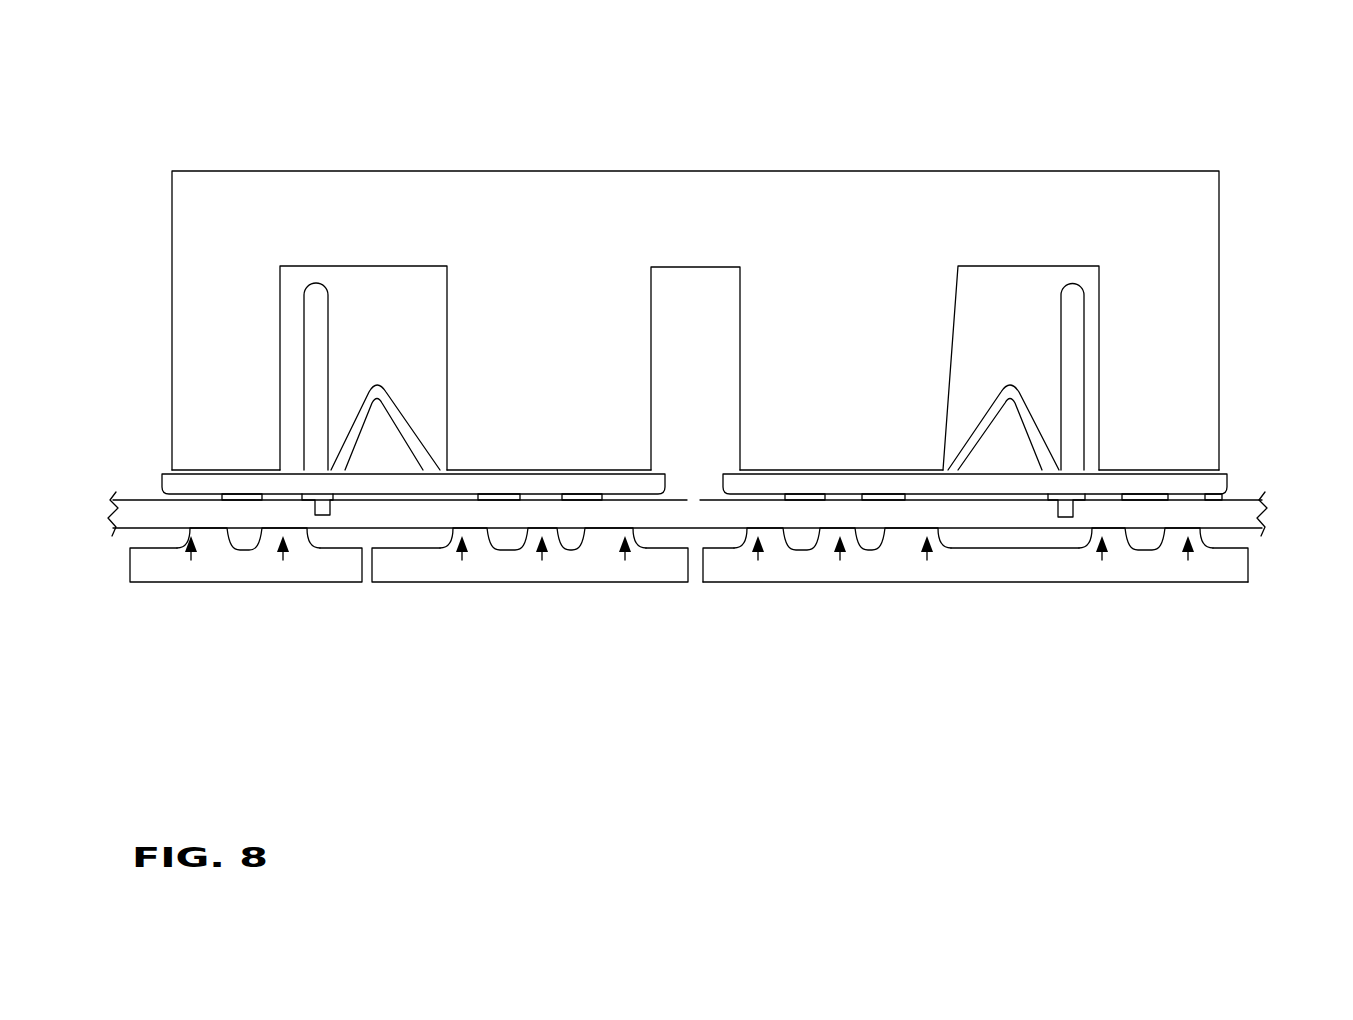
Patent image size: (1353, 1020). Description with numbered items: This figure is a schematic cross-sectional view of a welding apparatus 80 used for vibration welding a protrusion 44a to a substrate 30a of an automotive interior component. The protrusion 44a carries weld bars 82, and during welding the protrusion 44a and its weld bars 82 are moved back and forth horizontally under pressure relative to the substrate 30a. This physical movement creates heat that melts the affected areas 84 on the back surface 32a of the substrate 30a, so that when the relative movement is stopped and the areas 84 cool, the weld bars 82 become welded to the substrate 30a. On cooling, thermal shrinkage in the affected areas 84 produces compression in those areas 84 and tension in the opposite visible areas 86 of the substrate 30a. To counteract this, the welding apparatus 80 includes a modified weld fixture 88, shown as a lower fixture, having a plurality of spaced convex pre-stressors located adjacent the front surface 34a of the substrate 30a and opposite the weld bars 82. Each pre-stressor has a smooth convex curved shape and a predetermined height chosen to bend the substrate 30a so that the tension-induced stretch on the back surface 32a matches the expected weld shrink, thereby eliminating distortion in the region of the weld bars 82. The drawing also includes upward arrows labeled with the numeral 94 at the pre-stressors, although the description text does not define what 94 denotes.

The welding apparatus 80 is at (207, 122).
The protrusion 44a is at (313, 313).
The affected areas 84 is at (273, 493).
The back surface 32a is at (160, 500).
The front surface 34a is at (130, 537).
The substrate 30a is at (1264, 496).
The weld bars 82 is at (188, 497).
The visible areas 86 is at (205, 532).
The modified weld fixture 88 is at (1248, 583).
The solder joints 94 is at (191, 560).